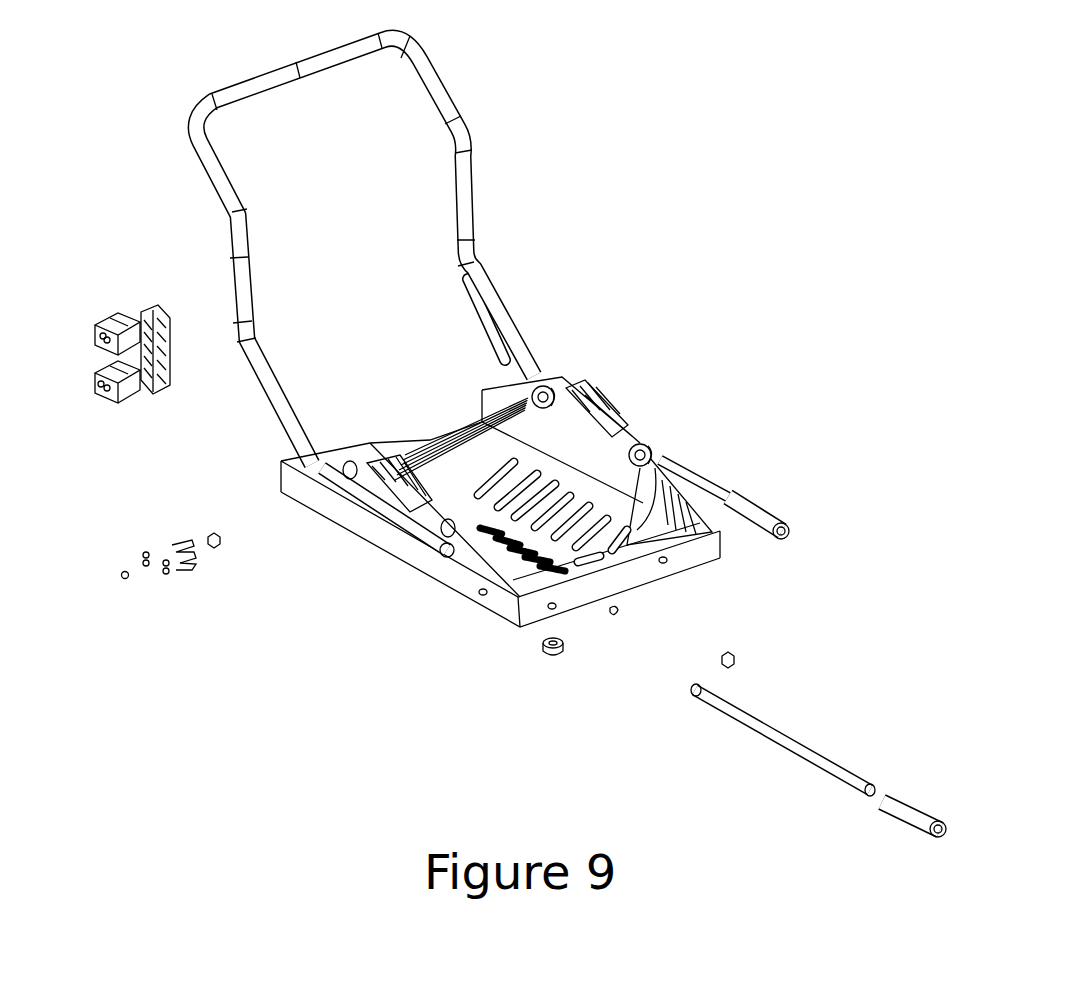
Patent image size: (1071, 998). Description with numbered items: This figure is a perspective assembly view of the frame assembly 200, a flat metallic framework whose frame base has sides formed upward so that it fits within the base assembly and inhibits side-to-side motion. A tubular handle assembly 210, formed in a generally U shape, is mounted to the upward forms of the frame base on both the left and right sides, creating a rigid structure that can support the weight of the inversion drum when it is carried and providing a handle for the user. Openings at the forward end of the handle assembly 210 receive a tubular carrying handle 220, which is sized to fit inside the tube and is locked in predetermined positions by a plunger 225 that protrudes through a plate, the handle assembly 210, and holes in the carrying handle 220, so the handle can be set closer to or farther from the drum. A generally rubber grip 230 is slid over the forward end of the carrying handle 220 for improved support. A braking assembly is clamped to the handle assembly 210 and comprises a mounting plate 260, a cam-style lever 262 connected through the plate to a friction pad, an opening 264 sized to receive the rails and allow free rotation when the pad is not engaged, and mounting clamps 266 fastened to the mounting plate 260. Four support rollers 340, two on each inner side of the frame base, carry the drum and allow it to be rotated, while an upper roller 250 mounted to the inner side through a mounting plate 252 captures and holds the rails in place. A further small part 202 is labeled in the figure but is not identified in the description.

The frame assembly 200 is at (684, 215).
The foot 202 is at (538, 658).
The tubular handle assembly 210 is at (460, 96).
The tubular carrying handle 220 is at (707, 478).
The plunger 225 is at (739, 645).
The grip 230 is at (766, 500).
The upper roller 250 is at (225, 548).
The mounting plate 252 is at (190, 570).
The mounting plate 260 is at (124, 310).
The lever 262 is at (140, 395).
The opening 264 is at (152, 330).
The mounting clamps 266 is at (103, 340).
The support rollers 340 is at (560, 378).